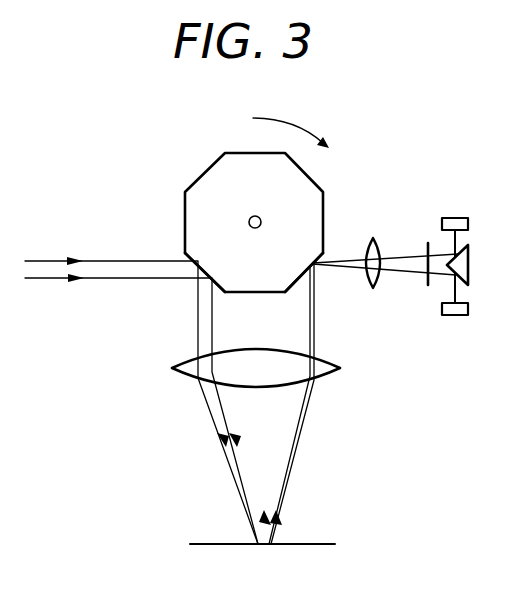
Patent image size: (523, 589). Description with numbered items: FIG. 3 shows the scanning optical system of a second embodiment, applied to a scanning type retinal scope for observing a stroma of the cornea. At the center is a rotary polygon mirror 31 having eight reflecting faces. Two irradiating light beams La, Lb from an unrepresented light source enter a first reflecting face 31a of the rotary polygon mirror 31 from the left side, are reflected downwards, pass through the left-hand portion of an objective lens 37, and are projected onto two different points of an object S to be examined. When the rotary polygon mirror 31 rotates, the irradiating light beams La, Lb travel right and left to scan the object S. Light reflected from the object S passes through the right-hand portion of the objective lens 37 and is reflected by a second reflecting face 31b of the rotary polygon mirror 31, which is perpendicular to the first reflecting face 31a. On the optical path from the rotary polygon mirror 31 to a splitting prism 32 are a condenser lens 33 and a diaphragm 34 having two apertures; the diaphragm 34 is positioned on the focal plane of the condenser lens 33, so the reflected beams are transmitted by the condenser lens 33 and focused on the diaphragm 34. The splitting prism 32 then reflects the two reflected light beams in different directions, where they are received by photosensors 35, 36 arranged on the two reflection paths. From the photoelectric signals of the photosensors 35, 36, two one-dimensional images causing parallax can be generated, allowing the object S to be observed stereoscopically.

The rotary polygon mirror 31 is at (197, 180).
The first reflecting face 31a is at (187, 250).
The second reflecting face 31b is at (318, 257).
The splitting prism 32 is at (470, 263).
The condenser lens 33 is at (375, 240).
The diaphragm 34 is at (427, 285).
The photosensor 35 is at (470, 308).
The photosensor 36 is at (468, 224).
The objective lens 37 is at (178, 372).
The object to be examined S is at (212, 543).
The irradiating light beam La is at (45, 281).
The irradiating light beam Lb is at (40, 258).